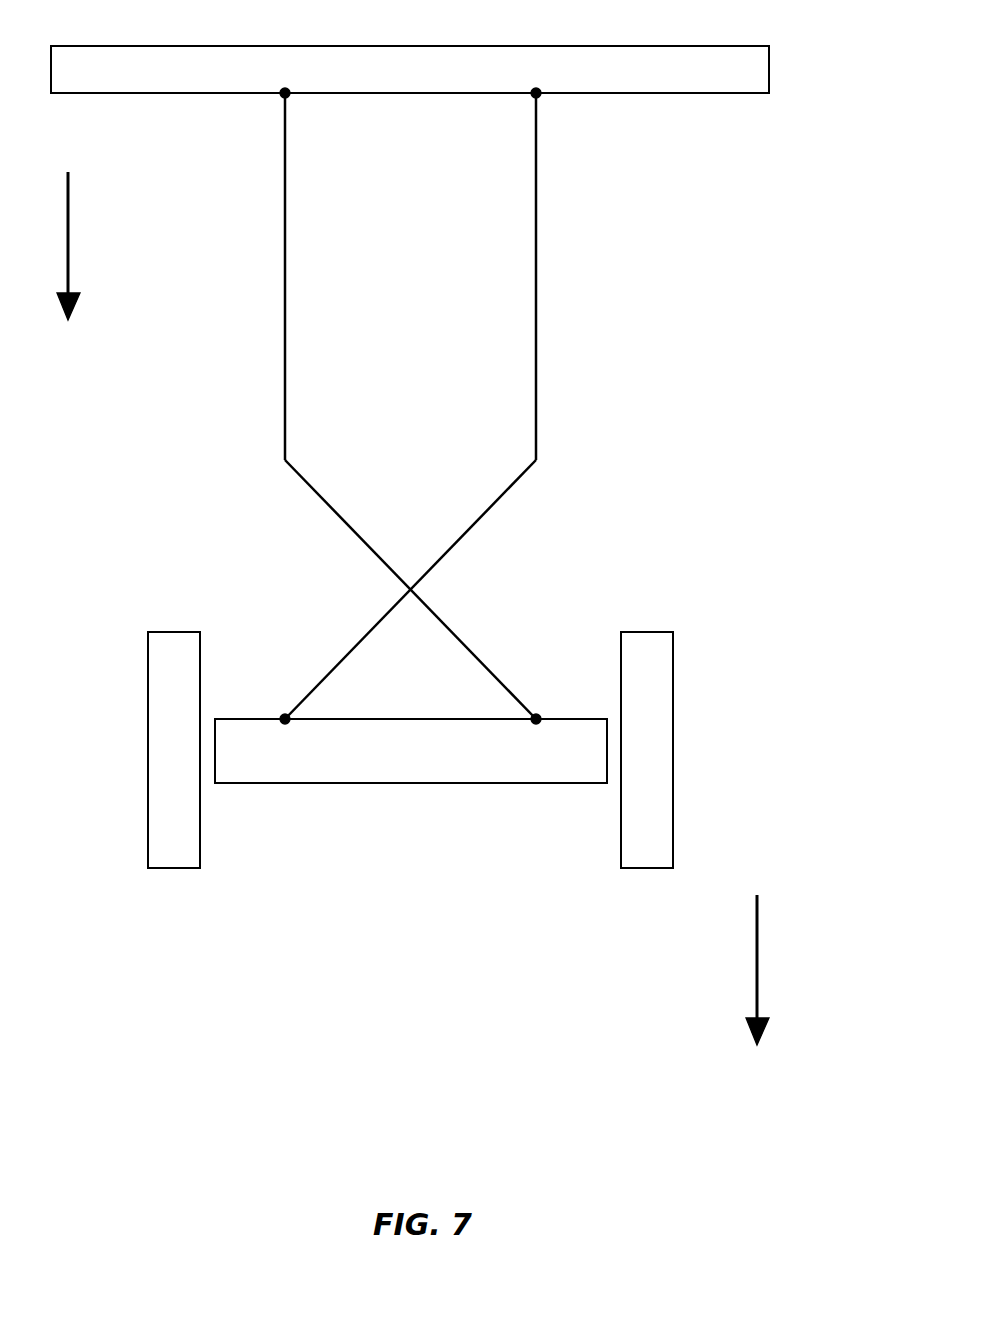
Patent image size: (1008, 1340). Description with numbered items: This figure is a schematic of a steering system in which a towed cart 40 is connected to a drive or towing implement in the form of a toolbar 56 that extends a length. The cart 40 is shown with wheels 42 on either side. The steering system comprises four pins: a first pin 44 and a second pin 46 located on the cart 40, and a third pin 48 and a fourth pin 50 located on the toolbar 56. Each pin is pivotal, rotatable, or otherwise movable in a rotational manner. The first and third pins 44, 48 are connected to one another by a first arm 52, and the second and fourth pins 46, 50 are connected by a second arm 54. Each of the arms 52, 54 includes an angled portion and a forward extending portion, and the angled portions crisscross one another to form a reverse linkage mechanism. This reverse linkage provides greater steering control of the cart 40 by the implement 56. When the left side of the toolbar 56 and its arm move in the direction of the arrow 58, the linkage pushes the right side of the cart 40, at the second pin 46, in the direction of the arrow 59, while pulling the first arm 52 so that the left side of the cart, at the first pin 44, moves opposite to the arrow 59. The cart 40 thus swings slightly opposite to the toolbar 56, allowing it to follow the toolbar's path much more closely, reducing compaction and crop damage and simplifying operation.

The towed cart 40 is at (499, 883).
The wheels 42 is at (673, 692).
The first pin 44 is at (284, 712).
The second pin 46 is at (537, 712).
The third pin 48 is at (539, 100).
The fourth pin 50 is at (282, 100).
The first arm 52 is at (536, 305).
The second arm 54 is at (285, 305).
The toolbar 56 is at (681, 46).
The arrow 58 is at (70, 223).
The arrow 59 is at (757, 949).